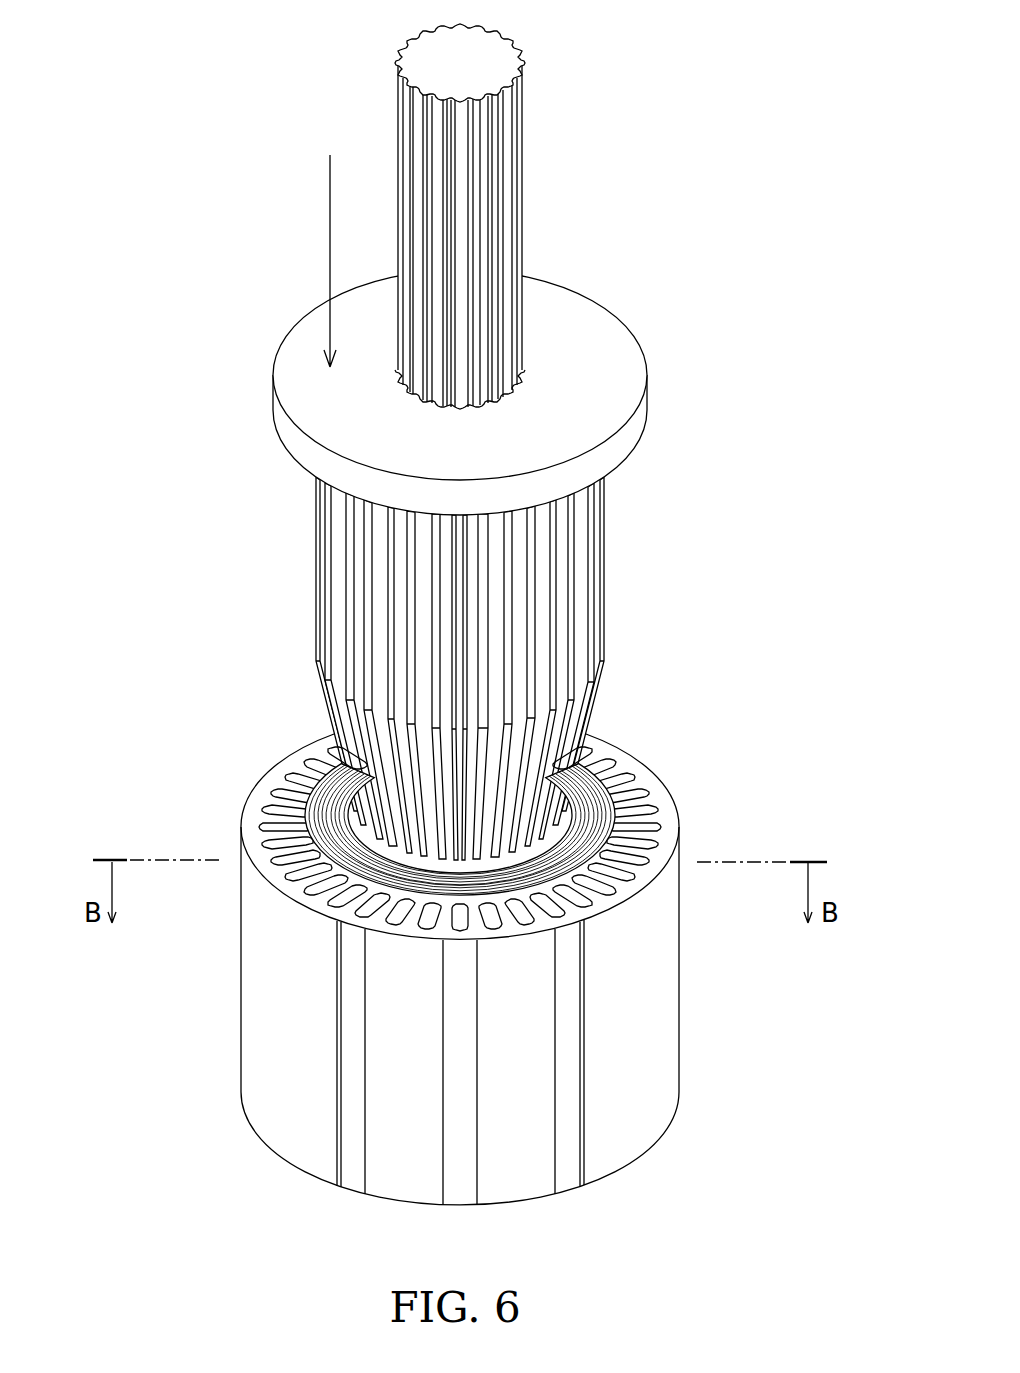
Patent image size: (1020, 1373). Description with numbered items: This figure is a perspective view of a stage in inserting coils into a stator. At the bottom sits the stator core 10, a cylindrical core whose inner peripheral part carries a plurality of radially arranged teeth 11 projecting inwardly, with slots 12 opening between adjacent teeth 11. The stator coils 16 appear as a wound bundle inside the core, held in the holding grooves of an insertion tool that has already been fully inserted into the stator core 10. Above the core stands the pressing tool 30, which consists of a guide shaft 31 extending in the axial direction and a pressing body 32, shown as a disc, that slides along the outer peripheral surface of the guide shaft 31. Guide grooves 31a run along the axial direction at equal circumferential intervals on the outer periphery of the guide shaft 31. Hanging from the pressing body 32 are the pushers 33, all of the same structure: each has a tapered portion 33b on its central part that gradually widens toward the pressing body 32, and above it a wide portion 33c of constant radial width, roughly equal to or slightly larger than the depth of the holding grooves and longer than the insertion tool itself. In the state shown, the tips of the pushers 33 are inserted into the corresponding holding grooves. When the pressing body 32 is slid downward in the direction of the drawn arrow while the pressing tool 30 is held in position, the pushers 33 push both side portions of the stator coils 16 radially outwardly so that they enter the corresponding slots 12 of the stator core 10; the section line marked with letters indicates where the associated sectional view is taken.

The stator core 10 is at (692, 985).
The teeth 11 is at (622, 744).
The slots 12 is at (647, 778).
The stator coils 16 is at (607, 812).
The pressing tool 30 is at (243, 400).
The guide shaft 31 is at (487, 63).
The guide grooves 31a is at (508, 186).
The pressing body 32 is at (600, 344).
The pushers 33 is at (625, 612).
The tapered portion 33b is at (585, 735).
The wide portion 33c is at (567, 533).